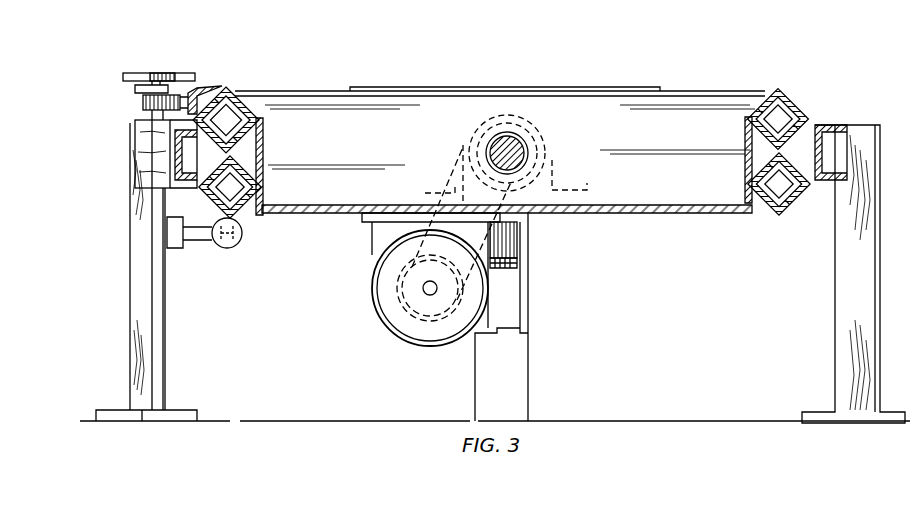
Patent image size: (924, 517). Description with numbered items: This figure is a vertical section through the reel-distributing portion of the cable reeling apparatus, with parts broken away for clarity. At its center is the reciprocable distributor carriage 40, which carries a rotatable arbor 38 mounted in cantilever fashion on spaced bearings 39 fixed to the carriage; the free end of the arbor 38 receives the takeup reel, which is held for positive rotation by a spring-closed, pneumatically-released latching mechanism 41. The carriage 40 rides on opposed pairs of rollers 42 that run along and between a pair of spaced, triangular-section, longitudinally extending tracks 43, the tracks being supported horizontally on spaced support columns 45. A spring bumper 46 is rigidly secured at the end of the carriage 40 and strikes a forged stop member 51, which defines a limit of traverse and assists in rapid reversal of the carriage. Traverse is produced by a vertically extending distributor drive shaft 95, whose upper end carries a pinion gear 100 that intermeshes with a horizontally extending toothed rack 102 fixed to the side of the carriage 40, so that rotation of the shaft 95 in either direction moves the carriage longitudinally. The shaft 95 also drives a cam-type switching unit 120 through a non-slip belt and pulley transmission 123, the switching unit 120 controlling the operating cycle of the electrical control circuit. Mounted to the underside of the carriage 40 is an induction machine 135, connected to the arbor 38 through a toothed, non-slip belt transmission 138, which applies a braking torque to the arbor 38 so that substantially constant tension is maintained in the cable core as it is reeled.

The rotatable arbor 38 is at (522, 152).
The spaced bearings 39 is at (543, 133).
The distributor carriage 40 is at (307, 93).
The latching mechanism 41 is at (538, 252).
The rollers 42 is at (242, 163).
The tracks 43 is at (190, 172).
The support columns 45 is at (132, 255).
The spring bumper 46 is at (238, 240).
The stop member 51 is at (198, 235).
The distributor drive shaft 95 is at (163, 310).
The pinion gear 100 is at (143, 103).
The toothed rack 102 is at (193, 88).
The switching unit 120 is at (133, 160).
The belt and pulley transmission 123 is at (147, 71).
The induction machine 135 is at (374, 306).
The belt transmission 138 is at (453, 183).